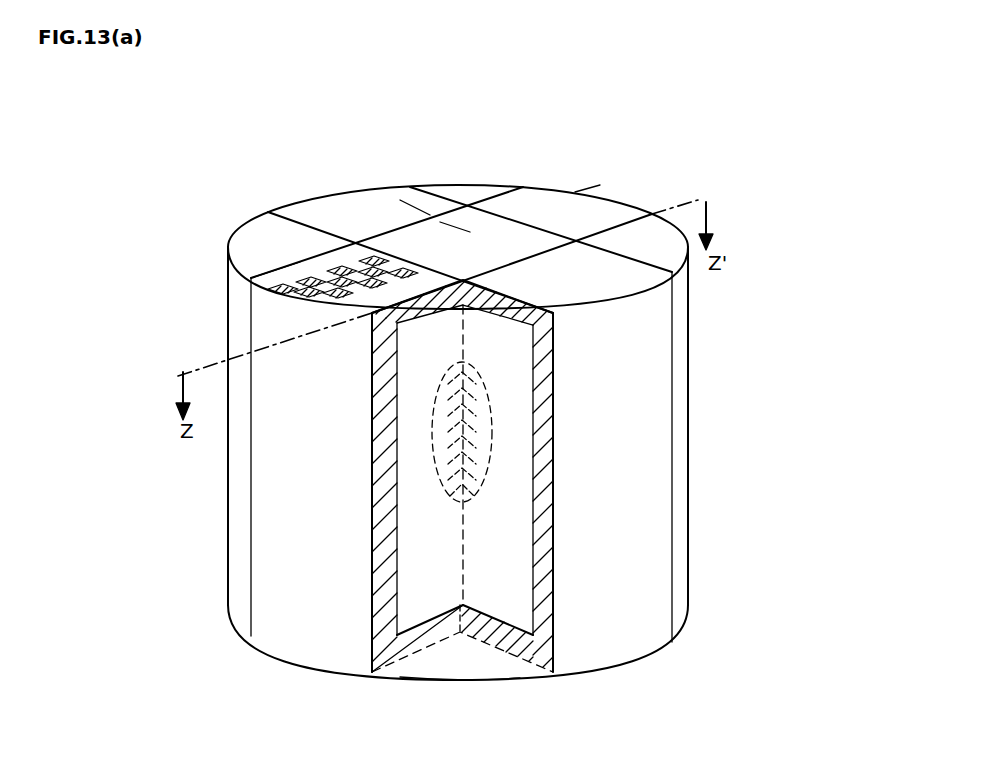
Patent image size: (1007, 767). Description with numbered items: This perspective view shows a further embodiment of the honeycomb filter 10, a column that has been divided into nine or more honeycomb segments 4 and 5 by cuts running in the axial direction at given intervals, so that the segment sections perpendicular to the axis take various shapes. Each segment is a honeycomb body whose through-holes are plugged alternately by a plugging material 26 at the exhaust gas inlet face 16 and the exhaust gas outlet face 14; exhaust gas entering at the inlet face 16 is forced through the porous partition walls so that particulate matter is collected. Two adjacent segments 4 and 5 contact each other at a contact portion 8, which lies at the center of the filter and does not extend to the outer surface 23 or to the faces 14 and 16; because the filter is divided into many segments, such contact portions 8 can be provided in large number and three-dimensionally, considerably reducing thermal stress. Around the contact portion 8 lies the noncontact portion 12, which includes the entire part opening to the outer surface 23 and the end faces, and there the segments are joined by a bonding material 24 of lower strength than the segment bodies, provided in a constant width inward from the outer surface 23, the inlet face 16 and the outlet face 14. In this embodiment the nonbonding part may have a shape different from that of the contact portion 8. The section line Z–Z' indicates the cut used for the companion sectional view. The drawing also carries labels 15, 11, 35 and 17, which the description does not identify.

The honeycomb filter 10 is at (512, 168).
The honeycomb segment 4 is at (250, 260).
The honeycomb segment 5 is at (448, 230).
The exhaust gas outlet face 14 is at (403, 200).
The end face region 15 is at (251, 279).
The plugging material 26 is at (360, 262).
The through holes (cells) 11 is at (341, 258).
The noncontact portion 12 is at (527, 395).
The contact portion 8 is at (490, 456).
The cut wall surface 35 is at (375, 532).
The outer surface 23 is at (645, 583).
The exhaust gas inlet face 16 is at (628, 660).
The bottom edge 17 is at (473, 680).
The bonding material 24 is at (547, 673).